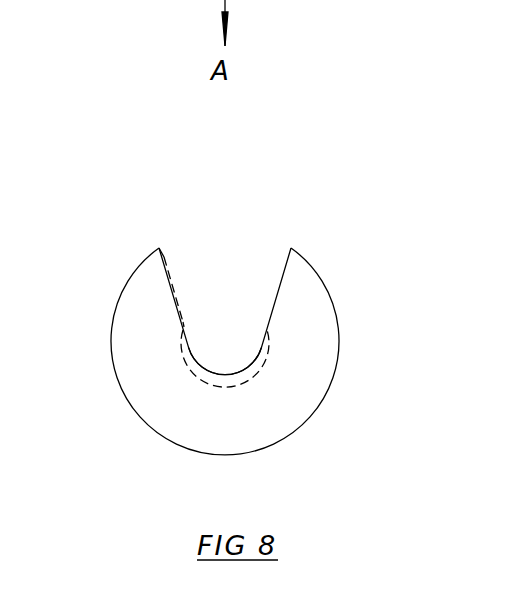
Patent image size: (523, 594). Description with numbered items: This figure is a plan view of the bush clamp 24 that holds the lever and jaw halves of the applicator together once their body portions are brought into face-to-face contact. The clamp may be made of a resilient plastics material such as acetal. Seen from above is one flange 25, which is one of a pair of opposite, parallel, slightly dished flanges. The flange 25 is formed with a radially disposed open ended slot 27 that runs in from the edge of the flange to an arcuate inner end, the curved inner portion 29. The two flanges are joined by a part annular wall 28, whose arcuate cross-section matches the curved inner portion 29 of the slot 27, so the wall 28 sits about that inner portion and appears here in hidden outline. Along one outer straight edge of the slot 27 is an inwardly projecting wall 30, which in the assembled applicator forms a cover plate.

The bush clamp 24 is at (338, 313).
The flange 25 is at (325, 367).
The radially disposed open ended slot 27 is at (239, 272).
The part annular wall 28 is at (243, 381).
The curved inner portion 29 is at (198, 358).
The inwardly projecting wall 30 is at (164, 257).